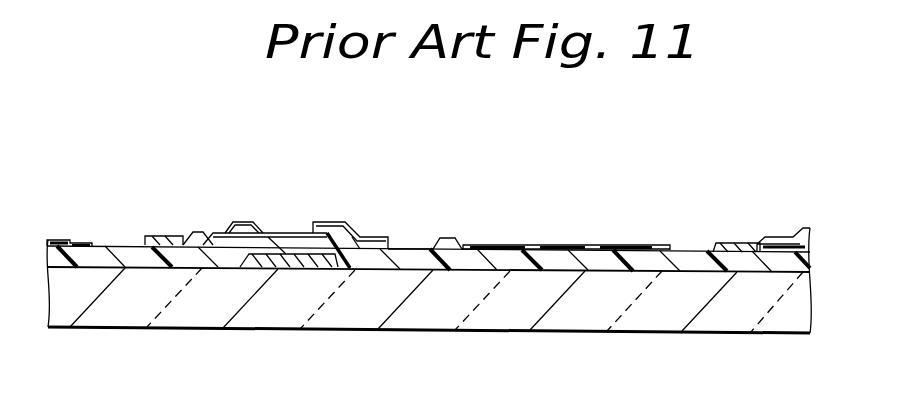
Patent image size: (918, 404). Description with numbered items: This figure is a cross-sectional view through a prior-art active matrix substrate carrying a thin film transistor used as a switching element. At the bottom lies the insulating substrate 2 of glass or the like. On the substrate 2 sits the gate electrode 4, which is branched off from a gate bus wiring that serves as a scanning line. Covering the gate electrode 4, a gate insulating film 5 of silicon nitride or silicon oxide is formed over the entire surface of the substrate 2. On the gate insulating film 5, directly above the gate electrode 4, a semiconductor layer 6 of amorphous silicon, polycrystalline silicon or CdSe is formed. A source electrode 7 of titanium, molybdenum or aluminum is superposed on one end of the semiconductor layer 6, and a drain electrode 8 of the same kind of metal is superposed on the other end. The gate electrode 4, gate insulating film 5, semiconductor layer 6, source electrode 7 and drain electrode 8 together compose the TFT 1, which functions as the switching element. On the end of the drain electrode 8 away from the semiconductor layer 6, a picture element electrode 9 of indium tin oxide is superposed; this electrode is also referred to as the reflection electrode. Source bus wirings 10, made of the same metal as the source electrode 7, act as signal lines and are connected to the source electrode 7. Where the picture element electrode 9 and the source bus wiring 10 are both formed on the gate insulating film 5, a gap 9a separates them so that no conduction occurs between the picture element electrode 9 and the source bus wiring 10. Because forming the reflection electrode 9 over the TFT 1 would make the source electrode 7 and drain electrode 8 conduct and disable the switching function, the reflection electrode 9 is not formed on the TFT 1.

The TFT 1 is at (380, 181).
The substrate 2 is at (492, 317).
The gate electrode 4 is at (253, 263).
The gate insulating film 5 is at (133, 253).
The semiconductor layer 6 is at (285, 233).
The source electrode 7 is at (198, 233).
The drain electrode 8 is at (374, 240).
The picture element electrode 9 is at (64, 241).
The gap 9a is at (114, 236).
The source bus wiring 10 is at (722, 243).